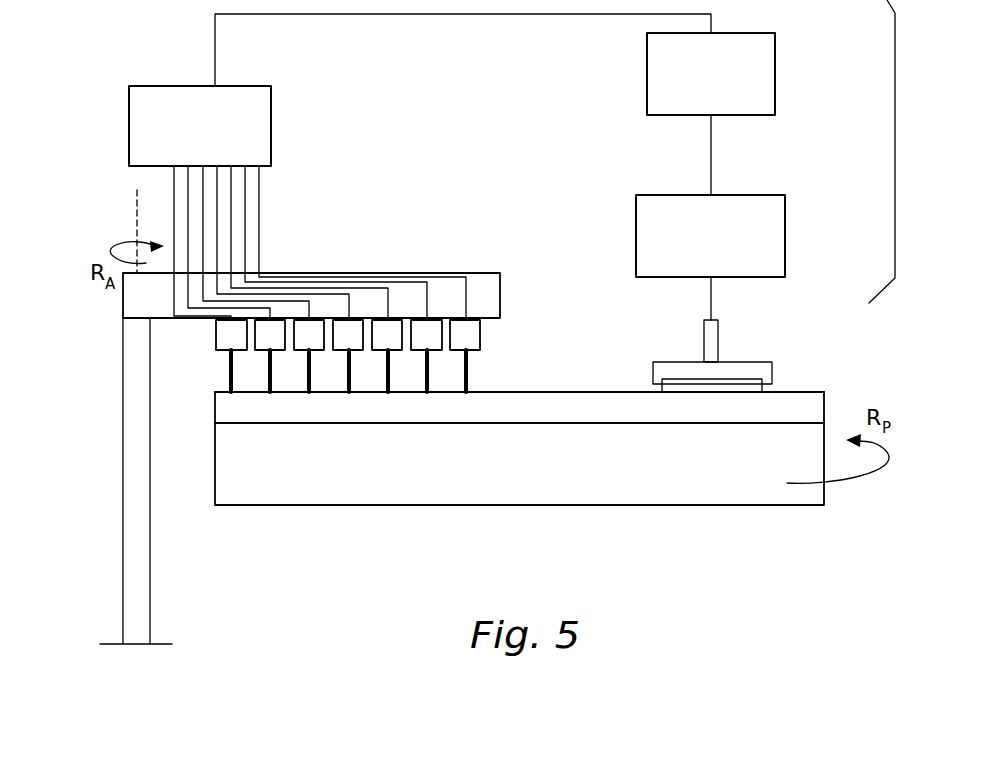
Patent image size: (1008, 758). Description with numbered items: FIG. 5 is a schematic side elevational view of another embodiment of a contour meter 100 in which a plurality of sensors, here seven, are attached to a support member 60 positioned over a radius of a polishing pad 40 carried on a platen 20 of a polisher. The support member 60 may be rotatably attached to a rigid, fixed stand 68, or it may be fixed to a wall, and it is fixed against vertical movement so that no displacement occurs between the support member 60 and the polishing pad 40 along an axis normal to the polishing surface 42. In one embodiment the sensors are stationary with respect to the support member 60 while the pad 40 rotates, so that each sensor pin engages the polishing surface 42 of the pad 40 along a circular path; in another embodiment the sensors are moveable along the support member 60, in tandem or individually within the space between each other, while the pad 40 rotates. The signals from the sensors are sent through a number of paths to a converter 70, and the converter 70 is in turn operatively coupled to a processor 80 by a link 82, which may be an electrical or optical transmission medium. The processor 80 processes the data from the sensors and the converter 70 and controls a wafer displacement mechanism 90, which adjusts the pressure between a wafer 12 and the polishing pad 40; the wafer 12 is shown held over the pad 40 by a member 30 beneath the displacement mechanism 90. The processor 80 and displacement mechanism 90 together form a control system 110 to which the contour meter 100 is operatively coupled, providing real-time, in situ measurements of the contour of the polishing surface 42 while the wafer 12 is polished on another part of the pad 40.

The wafer 12 is at (740, 382).
The platen 20 is at (757, 494).
The workpiece holder 30 is at (765, 370).
The polishing pad 40 is at (805, 396).
The polishing surface 42 is at (605, 392).
The support member 60 is at (485, 283).
The stand 68 is at (133, 455).
The converter 70 is at (167, 87).
The processor 80 is at (776, 52).
The link 82 is at (475, 14).
The wafer displacement mechanism 90 is at (787, 236).
The contour meter 100 is at (457, 213).
The control system 110 is at (893, 118).